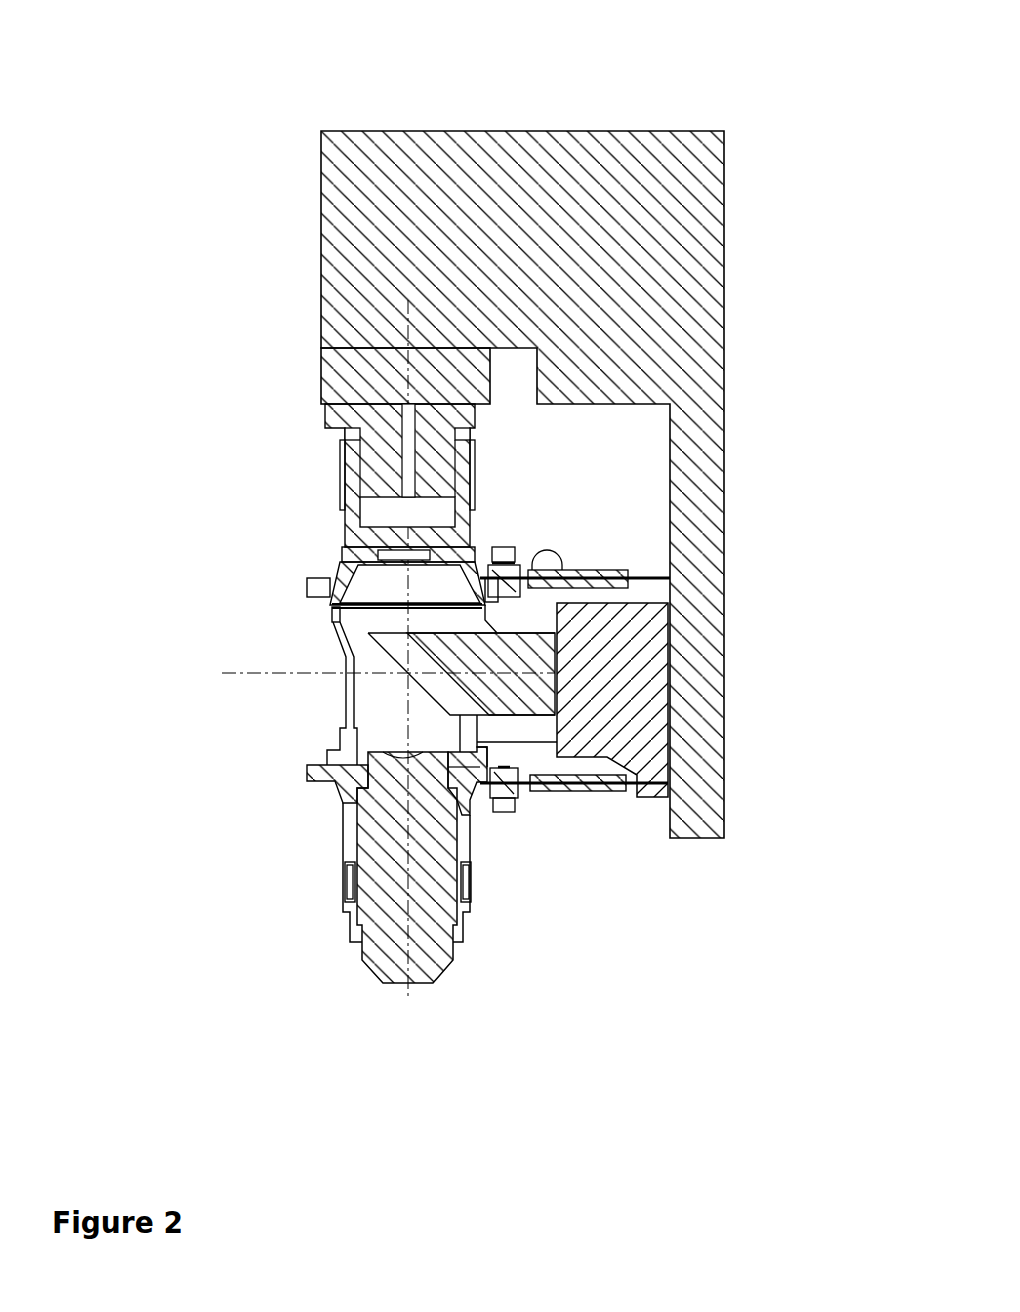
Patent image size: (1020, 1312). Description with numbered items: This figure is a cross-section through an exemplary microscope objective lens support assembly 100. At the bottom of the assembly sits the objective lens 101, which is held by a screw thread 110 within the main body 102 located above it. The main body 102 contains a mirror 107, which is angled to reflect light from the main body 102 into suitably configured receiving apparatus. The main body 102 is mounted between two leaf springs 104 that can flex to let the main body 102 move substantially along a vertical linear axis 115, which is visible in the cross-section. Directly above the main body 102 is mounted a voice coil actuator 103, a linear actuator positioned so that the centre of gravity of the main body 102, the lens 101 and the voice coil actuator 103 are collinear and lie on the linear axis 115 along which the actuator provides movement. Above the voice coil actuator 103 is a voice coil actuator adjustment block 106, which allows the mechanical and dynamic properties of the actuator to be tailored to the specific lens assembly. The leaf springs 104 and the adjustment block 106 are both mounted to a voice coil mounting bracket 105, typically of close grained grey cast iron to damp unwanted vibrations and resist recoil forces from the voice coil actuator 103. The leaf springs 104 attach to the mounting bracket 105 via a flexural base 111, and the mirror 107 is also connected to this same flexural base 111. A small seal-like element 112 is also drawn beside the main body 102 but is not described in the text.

The objective lens support assembly 100 is at (877, 28).
The objective lens 101 is at (436, 941).
The main body 102 is at (347, 823).
The voice coil actuator 103 is at (372, 458).
The leaf springs 104 is at (575, 792).
The voice coil mounting bracket 105 is at (658, 280).
The voice coil actuator adjustment block 106 is at (372, 365).
The mirror 107 is at (392, 655).
The screw thread 110 is at (345, 898).
The flexural base 111 is at (637, 652).
The seal ring 112 is at (325, 585).
The linear axis 115 is at (406, 998).